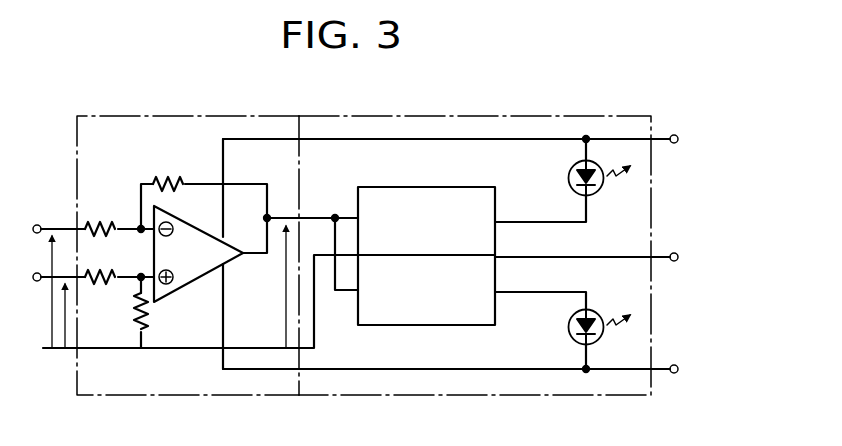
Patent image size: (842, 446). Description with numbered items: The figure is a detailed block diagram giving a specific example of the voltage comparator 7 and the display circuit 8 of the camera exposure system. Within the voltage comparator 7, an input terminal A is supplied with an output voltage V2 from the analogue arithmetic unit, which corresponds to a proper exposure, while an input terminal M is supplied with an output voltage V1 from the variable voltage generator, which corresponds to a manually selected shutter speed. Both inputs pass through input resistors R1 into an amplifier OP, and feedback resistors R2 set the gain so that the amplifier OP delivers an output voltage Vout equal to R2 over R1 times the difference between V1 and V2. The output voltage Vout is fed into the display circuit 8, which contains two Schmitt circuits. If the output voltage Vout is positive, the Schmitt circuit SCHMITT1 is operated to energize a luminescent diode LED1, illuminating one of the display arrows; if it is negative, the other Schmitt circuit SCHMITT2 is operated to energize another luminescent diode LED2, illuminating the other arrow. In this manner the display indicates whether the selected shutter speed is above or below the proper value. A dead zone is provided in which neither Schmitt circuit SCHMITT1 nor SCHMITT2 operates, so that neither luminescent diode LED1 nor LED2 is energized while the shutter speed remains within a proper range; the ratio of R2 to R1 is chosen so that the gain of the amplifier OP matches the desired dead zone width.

The voltage comparator 7 is at (186, 115).
The display circuit 8 is at (425, 116).
The input resistor R1 is at (102, 222).
The feedback resistor R2 is at (170, 178).
The amplifier OP is at (198, 254).
The output voltage Vout is at (286, 292).
The output voltage of the variable voltage generator V1 is at (67, 318).
The output voltage of the analogue arithmetic unit V2 is at (51, 311).
The input terminal A is at (46, 228).
The input terminal M is at (45, 277).
The Schmitt circuit SCHMITT1 is at (472, 221).
The Schmitt circuit SCHMITT2 is at (472, 290).
The luminescent diode LED1 is at (568, 181).
The luminescent diode LED2 is at (569, 333).